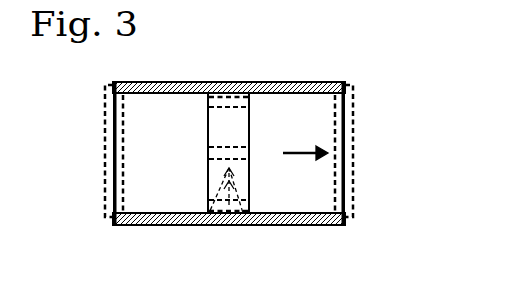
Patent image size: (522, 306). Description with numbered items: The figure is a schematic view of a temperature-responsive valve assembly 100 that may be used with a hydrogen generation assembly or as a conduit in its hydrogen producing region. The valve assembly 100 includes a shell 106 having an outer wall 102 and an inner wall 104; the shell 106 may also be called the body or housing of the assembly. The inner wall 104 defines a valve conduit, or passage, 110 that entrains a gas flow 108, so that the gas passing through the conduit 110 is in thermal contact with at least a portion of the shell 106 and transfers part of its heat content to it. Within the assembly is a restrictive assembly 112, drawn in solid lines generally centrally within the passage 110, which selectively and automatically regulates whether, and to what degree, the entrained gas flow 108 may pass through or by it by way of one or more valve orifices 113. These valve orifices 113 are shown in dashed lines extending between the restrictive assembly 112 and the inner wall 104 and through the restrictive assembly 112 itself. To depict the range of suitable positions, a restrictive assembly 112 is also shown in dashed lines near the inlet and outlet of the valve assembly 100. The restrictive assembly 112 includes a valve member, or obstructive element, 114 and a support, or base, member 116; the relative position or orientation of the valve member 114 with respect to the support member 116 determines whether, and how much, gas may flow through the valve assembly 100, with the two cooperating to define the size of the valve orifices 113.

The temperature-responsive valve assembly 100 is at (399, 77).
The outer wall 102 is at (288, 81).
The inner wall 104 is at (305, 94).
The shell 106 is at (274, 74).
The gas flow 108 is at (292, 156).
The valve conduit 110 is at (318, 200).
The restrictive assembly 112 is at (225, 86).
The valve orifices 113 is at (206, 204).
The valve member 114 is at (212, 213).
The support member 116 is at (243, 213).